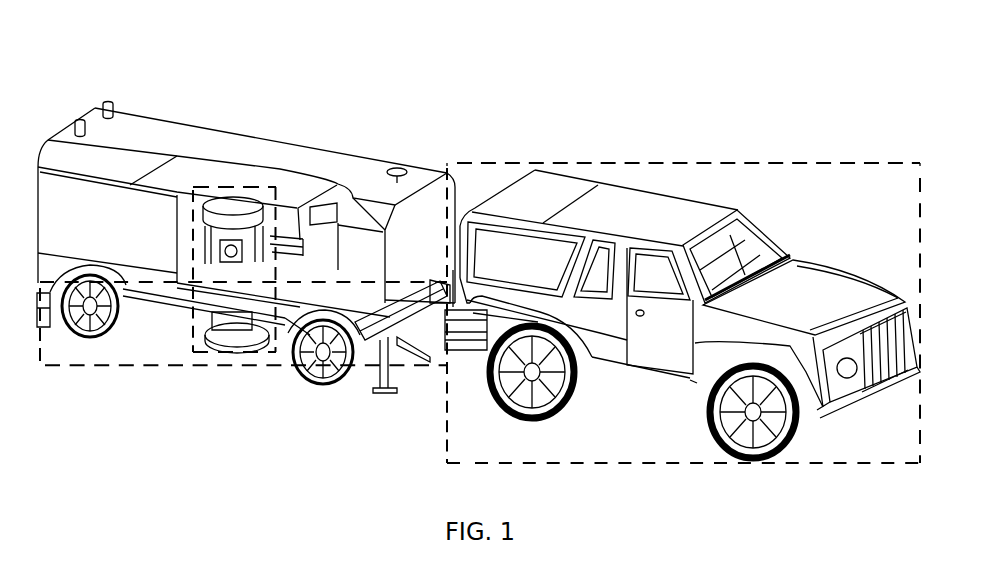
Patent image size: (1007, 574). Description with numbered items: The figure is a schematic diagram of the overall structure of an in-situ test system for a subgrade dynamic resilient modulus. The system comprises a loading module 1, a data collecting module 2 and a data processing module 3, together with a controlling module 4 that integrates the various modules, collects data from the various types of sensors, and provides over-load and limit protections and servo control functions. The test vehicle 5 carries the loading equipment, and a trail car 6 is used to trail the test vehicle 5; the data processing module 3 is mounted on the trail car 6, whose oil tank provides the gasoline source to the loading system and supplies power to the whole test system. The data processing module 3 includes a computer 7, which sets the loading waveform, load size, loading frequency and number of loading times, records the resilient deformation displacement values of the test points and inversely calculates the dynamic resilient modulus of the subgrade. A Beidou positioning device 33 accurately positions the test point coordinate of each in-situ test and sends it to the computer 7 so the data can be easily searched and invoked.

The loading module 1 is at (233, 190).
The data collecting module 2 is at (260, 367).
The data processing module 3 is at (822, 160).
The controlling module 4 is at (338, 220).
The test vehicle 5 is at (137, 143).
The trail car 6 is at (813, 290).
The computer 7 is at (760, 242).
The Beidou positioning device 33 is at (399, 167).